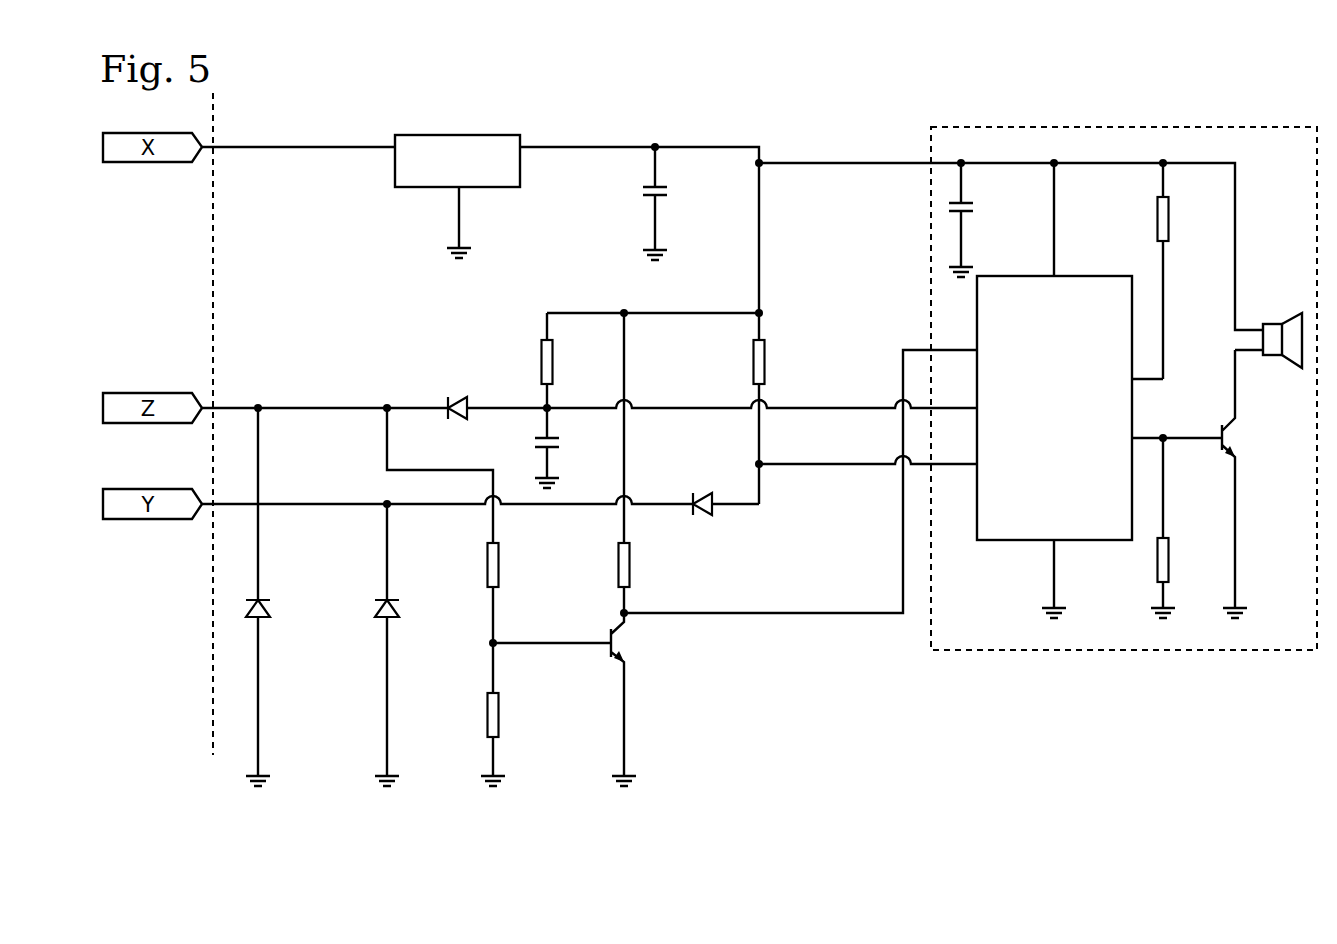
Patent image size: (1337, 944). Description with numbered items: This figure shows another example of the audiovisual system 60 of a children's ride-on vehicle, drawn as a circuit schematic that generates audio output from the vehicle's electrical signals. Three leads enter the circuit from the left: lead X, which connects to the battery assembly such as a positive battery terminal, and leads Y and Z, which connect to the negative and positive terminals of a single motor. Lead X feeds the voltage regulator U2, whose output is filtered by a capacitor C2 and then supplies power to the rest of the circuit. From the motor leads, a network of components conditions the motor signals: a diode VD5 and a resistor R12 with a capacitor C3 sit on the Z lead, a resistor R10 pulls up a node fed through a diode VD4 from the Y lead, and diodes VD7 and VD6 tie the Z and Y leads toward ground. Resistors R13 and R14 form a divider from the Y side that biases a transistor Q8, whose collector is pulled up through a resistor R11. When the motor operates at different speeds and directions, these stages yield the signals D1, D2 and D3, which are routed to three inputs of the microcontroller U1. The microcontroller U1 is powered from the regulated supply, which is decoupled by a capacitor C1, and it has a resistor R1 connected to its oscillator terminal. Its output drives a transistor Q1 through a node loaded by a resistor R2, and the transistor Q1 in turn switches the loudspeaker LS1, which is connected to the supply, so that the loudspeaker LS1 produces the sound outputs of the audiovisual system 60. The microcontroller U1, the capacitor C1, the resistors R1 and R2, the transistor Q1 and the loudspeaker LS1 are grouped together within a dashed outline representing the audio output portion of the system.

The audiovisual system 60 is at (843, 99).
The voltage regulator U2 is at (428, 135).
The capacitor C2 is at (664, 190).
The resistor R12 is at (554, 366).
The capacitor C3 is at (554, 442).
The resistor R10 is at (766, 366).
The diode VD5 is at (458, 397).
The diode VD4 is at (692, 497).
The diode VD7 is at (266, 600).
The diode VD6 is at (394, 600).
The resistor R13 is at (499, 568).
The resistor R14 is at (499, 718).
The resistor R11 is at (630, 568).
The transistor Q8 is at (608, 633).
The signal D1 is at (829, 408).
The signal D2 is at (829, 464).
The signal D3 is at (829, 613).
The capacitor C1 is at (969, 205).
The microcontroller U1 is at (1064, 276).
The resistor R1 is at (1170, 226).
The resistor R2 is at (1170, 563).
The transistor Q1 is at (1219, 428).
The loudspeaker LS1 is at (1272, 324).